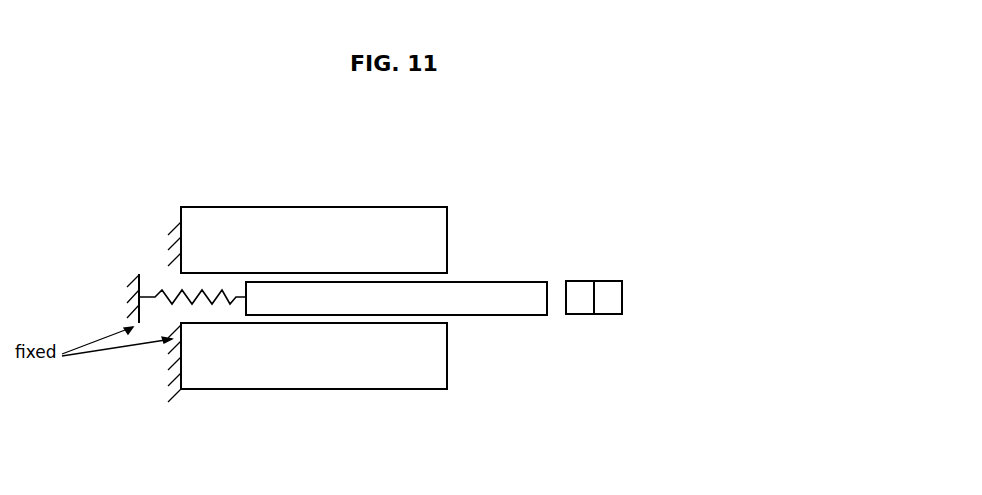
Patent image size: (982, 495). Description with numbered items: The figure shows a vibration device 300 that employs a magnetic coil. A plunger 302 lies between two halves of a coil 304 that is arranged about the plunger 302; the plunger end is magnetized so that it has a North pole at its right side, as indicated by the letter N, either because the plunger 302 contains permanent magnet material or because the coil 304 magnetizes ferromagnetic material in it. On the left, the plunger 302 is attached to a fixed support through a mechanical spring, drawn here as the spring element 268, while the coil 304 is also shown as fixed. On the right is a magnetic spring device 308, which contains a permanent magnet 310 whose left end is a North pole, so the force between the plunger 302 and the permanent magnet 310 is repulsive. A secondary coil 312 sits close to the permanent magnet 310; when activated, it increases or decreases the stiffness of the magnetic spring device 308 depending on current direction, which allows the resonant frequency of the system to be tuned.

The vibration device 300 is at (513, 131).
The spring 268 is at (162, 291).
The plunger 302 is at (480, 280).
The coil 304 is at (300, 207).
The magnetic spring device 308 is at (597, 268).
The permanent magnet 310 is at (577, 315).
The secondary coil 312 is at (622, 281).